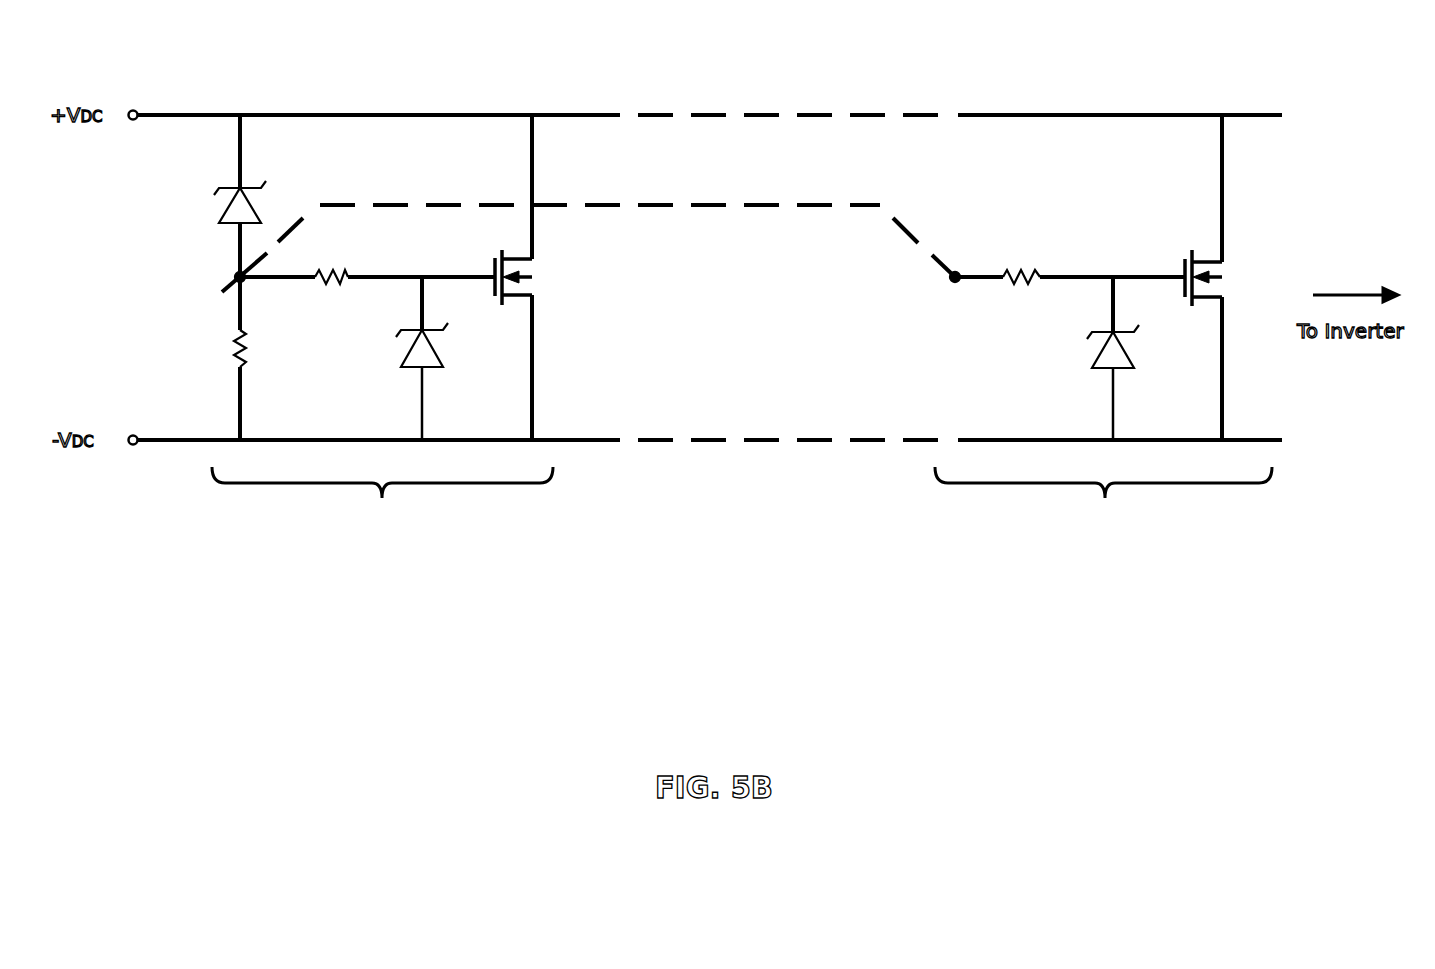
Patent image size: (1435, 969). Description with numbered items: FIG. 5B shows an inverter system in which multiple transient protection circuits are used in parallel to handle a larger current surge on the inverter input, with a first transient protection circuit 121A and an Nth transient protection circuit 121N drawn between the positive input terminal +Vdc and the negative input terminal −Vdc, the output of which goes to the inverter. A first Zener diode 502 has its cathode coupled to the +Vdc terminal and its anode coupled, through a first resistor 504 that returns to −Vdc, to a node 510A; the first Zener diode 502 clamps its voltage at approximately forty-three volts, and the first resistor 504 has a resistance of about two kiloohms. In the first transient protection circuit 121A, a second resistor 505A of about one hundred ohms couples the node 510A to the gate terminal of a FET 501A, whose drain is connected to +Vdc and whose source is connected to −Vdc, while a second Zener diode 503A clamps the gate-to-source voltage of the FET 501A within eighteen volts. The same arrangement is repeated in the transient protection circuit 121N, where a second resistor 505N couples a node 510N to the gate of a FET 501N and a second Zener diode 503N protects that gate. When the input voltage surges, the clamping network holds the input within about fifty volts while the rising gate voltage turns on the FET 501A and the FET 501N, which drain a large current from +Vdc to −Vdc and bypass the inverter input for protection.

The first Zener diode 502 is at (212, 214).
The node 510A is at (233, 282).
The first resistor 504 is at (222, 352).
The second resistor 505A is at (340, 272).
The FET 501A is at (545, 282).
The second Zener diode 503A is at (402, 355).
The second resistor 505N is at (1030, 270).
The node 510N is at (946, 283).
The second Zener diode 503N is at (1090, 352).
The FET 501N is at (1240, 260).
The transient protection circuit 121A is at (382, 503).
The transient protection circuit 121N is at (1103, 503).